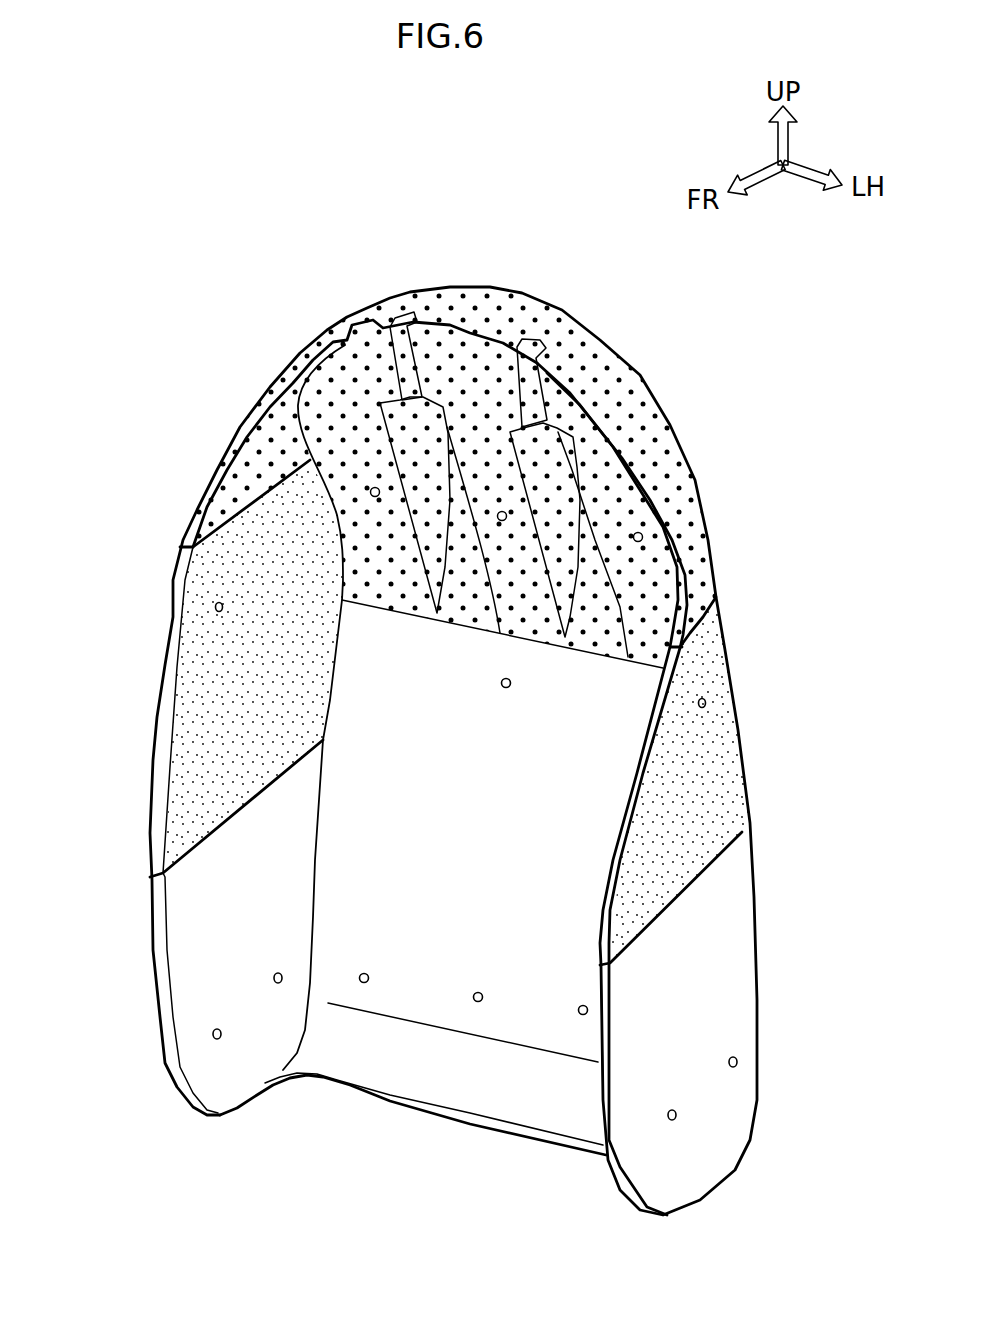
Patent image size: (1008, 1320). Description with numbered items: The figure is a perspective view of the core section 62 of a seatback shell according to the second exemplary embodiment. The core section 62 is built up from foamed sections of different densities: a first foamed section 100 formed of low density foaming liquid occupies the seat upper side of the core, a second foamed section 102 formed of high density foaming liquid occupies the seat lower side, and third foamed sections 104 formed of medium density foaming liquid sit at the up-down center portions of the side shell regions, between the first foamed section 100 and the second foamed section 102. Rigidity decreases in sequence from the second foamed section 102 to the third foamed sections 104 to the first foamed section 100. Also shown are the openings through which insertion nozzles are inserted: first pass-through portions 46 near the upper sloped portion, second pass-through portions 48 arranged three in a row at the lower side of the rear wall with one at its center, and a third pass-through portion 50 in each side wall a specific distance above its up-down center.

The core section 62 is at (573, 230).
The first pass-through portions 46 is at (639, 532).
The second pass-through portions 48 is at (583, 1005).
The third pass-through portions 50 is at (214, 607).
The first foamed section 100 is at (668, 445).
The second foamed section 102 is at (728, 962).
The third foamed sections 104 is at (187, 712).